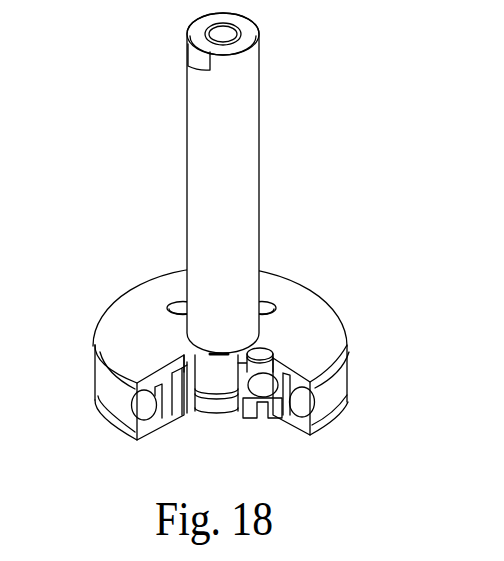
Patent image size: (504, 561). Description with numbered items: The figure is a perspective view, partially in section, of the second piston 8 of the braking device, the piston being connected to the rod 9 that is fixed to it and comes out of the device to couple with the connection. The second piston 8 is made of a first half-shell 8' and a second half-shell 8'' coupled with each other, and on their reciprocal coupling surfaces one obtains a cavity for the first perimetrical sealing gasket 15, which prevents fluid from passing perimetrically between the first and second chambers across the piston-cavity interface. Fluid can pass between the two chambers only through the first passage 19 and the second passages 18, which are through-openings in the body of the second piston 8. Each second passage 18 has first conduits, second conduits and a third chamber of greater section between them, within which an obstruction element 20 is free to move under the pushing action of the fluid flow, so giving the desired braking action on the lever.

The rod 9 is at (190, 133).
The second passage 18 is at (178, 298).
The first passage 19 is at (178, 352).
The first perimetrical sealing gasket 15 is at (113, 397).
The second piston 8 is at (110, 416).
The obstruction element 20 is at (263, 387).
The first half-shell 8' is at (237, 351).
The second half-shell 8'' is at (326, 417).